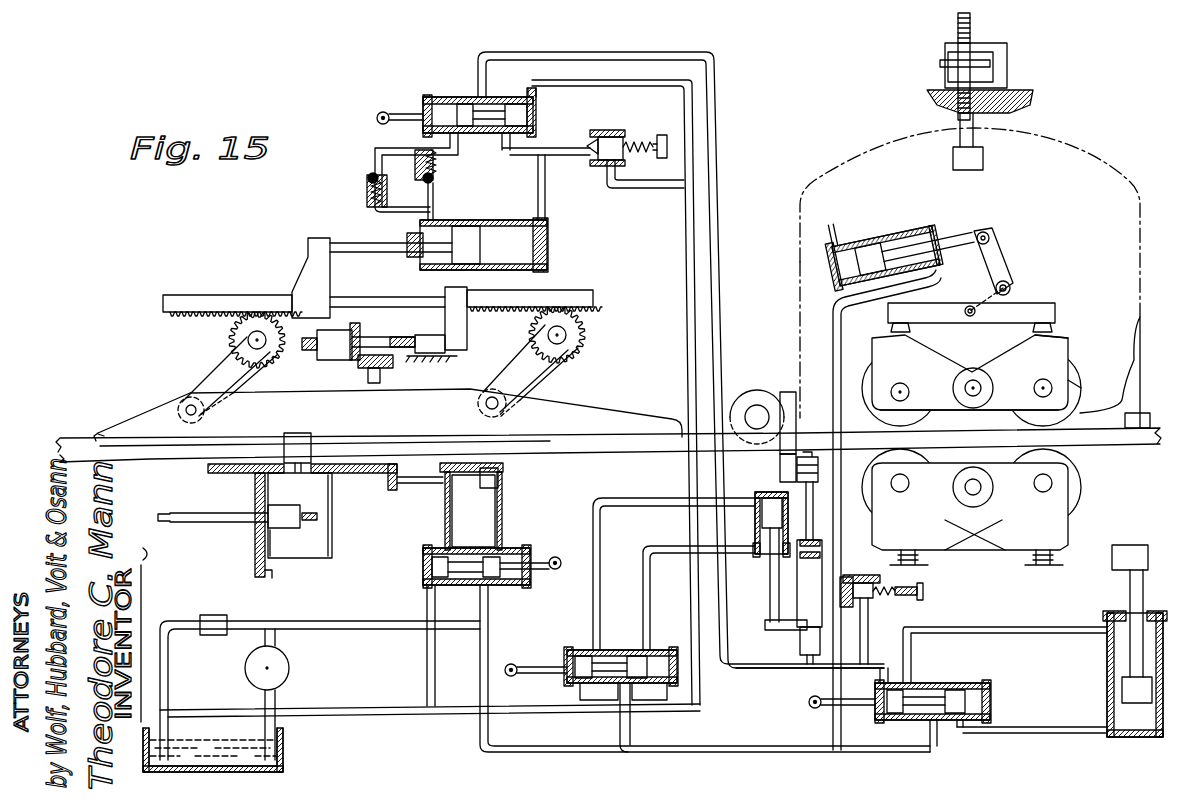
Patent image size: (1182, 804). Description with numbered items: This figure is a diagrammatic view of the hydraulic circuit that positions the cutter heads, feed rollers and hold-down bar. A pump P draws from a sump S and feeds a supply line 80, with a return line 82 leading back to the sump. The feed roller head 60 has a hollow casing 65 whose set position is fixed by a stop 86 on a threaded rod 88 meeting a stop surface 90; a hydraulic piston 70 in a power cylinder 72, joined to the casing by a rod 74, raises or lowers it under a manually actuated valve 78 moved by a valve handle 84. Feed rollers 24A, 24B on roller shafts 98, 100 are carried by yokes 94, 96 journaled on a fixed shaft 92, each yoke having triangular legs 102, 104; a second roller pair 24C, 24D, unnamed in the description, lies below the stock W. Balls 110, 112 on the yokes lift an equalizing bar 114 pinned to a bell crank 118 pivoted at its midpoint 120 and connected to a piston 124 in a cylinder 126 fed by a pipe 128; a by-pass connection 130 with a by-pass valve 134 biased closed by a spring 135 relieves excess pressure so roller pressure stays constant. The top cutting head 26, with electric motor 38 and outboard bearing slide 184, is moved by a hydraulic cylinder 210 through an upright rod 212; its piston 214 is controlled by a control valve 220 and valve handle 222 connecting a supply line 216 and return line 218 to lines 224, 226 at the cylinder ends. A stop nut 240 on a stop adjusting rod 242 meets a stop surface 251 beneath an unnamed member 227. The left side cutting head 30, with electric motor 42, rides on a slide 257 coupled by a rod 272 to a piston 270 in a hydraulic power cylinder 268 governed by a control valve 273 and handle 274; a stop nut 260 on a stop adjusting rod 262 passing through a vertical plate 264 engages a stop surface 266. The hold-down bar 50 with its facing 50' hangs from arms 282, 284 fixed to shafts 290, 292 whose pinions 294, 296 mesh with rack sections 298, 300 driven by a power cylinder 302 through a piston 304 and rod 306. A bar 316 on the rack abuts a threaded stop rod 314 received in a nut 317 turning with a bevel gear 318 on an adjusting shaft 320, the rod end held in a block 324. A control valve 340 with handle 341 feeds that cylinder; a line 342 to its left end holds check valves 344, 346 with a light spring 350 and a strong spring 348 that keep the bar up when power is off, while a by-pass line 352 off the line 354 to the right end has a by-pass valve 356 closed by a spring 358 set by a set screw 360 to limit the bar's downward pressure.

The handle 341 is at (378, 110).
The control valve 340 is at (418, 96).
The by-pass valve 356 is at (619, 130).
The spring 358 is at (655, 140).
The set screw 360 is at (656, 158).
The spring 348 is at (440, 164).
The check valve 346 is at (436, 178).
The line 342 is at (436, 195).
The check valve 344 is at (368, 178).
The spring 350 is at (372, 207).
The piston 304 is at (468, 230).
The by-pass line 352 is at (572, 157).
The line 354 is at (546, 196).
The power cylinder 302 is at (548, 244).
The rod 306 is at (385, 250).
The rack section 298 is at (177, 318).
The horizontal shaft 290 is at (248, 340).
The arm 282 is at (210, 362).
The pinion 294 is at (275, 359).
The hold-down bar 50 is at (388, 411).
The facing 50' is at (83, 425).
The bevel gear 318 is at (360, 335).
The stop rod 314 is at (400, 340).
The nut 317 is at (322, 336).
The adjusting shaft 320 is at (382, 375).
The bar 316 is at (467, 336).
The block 324 is at (450, 357).
The rack section 300 is at (589, 310).
The horizontal shaft 292 is at (568, 336).
The pinion 296 is at (578, 354).
The arm 284 is at (543, 370).
The stock W is at (652, 424).
The electric motor 38 is at (757, 409).
The top cutting head 26 is at (776, 386).
The left side cutting head 30 is at (231, 499).
The stop nut 260 is at (286, 507).
The slide 257 is at (380, 472).
The rod 272 is at (414, 484).
The piston 270 is at (486, 488).
The hydraulic power cylinder 268 is at (502, 468).
The stop adjusting rod 262 is at (210, 526).
The stop surface 266 is at (274, 545).
The electric motor 42 is at (334, 536).
The vertical plate 264 is at (276, 571).
The control valve 273 is at (520, 548).
The handle 274 is at (562, 552).
The line 224 is at (648, 502).
The line 226 is at (668, 548).
The outboard bearing slide 184 is at (780, 462).
The hydraulic cylinder 210 is at (770, 492).
The upright rod 212 is at (815, 482).
The piston 214 is at (764, 560).
The plate 227 is at (768, 602).
The stop surface 251 is at (798, 640).
The stop nut 240 is at (800, 650).
The stop adjusting rod 242 is at (800, 675).
The by-pass connection 130 is at (848, 576).
The spring 135 is at (900, 586).
The by-pass valve 134 is at (870, 600).
The return line 82 is at (400, 720).
The supply line 80 is at (385, 612).
The pump P is at (283, 678).
The sump S is at (285, 742).
The valve handle 222 is at (511, 663).
The control valve 220 is at (585, 650).
The return line 218 is at (578, 698).
The supply line 216 is at (628, 740).
The valve handle 84 is at (810, 708).
The manually actuated valve 78 is at (884, 729).
The power cylinder 72 is at (1107, 662).
The hydraulic piston 70 is at (1120, 692).
The rod 74 is at (1130, 590).
The threaded rod 88 is at (972, 32).
The stop 86 is at (1010, 60).
The stop surface 90 is at (1027, 88).
The hollow casing 65 is at (1084, 154).
The feed roller head 60 is at (860, 149).
The piston 124 is at (865, 240).
The cylinder 126 is at (903, 226).
The bell crank 118 is at (1000, 248).
The midpoint 120 is at (1010, 288).
The equalizing bar 114 is at (1030, 308).
The ball 112 is at (890, 326).
The ball 110 is at (1050, 327).
The yoke 96 is at (876, 340).
The yoke 94 is at (1060, 339).
The triangular leg 104 is at (880, 350).
The triangular leg 102 is at (1060, 356).
The roller shaft 100 is at (915, 378).
The fixed shaft 92 is at (978, 384).
The roller shaft 98 is at (1033, 384).
The feed roller 24A is at (1078, 390).
The feed roller 24B is at (925, 414).
The roll 24C is at (876, 496).
The roll 24D is at (1076, 487).
The pipe 128 is at (833, 337).